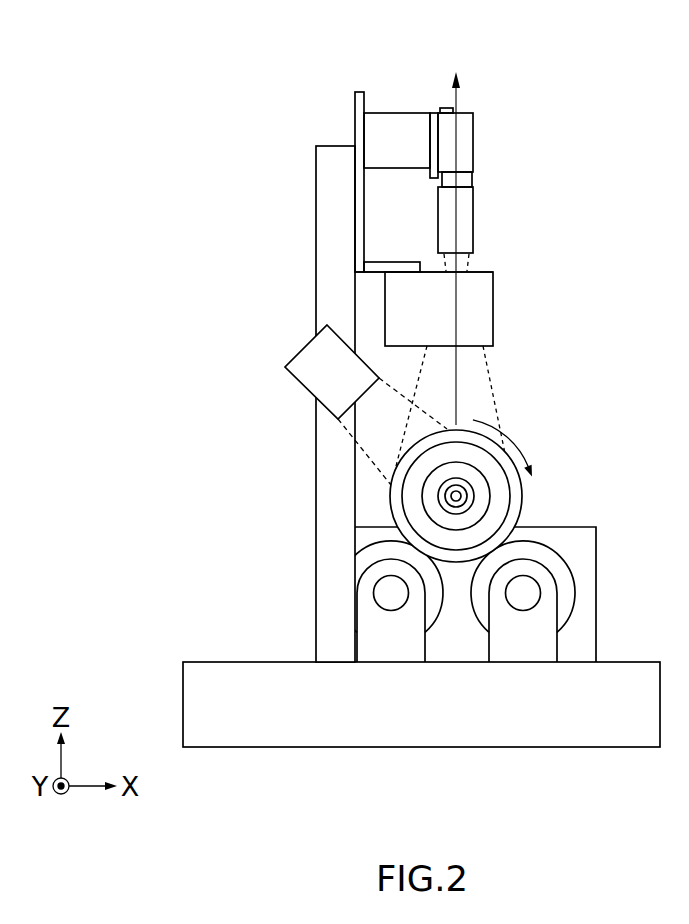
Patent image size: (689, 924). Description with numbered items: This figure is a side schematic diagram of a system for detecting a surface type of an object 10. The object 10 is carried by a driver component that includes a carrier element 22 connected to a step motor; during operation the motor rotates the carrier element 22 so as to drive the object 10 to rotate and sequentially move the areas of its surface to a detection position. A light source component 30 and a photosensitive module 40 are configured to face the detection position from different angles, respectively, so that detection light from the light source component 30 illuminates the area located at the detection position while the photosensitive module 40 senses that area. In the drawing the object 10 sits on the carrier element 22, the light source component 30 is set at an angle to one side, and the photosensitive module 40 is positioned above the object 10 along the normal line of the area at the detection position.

The object 10 is at (413, 498).
The carrier element 22 is at (387, 590).
The light source component 30 is at (318, 386).
The photosensitive module 40 is at (518, 114).